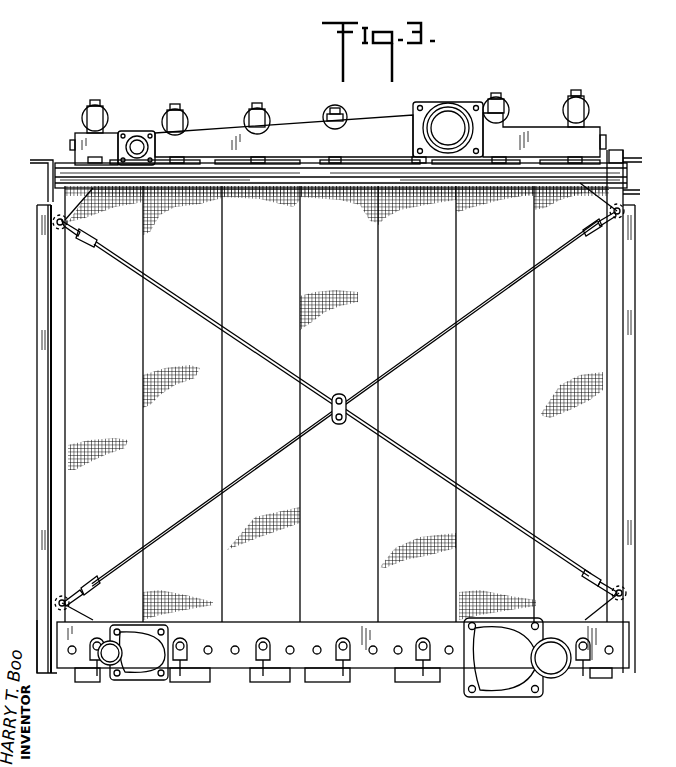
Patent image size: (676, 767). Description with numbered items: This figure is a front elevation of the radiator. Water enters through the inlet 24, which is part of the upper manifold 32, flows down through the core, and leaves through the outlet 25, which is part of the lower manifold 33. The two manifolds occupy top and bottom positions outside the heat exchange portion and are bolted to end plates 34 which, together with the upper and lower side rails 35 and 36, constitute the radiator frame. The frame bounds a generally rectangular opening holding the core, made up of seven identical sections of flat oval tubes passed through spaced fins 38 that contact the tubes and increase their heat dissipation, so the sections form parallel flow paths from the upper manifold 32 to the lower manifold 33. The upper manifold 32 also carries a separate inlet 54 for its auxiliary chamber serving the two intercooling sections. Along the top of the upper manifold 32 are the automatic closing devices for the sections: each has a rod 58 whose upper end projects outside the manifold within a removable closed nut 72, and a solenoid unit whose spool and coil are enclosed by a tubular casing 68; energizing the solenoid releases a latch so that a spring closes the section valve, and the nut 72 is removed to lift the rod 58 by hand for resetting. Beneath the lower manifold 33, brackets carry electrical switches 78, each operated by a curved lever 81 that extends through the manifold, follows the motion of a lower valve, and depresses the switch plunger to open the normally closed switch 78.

The inlet 24 is at (440, 118).
The outlet 25 is at (550, 680).
The upper manifold 32 is at (316, 132).
The lower manifold 33 is at (328, 632).
The end plates 34 is at (57, 277).
The upper side rail 35 is at (608, 162).
The lower side rail 36 is at (62, 627).
The fins 38 is at (90, 440).
The separate inlet 54 is at (133, 135).
The rod 58 is at (110, 665).
The tubular casing 68 is at (272, 116).
The closed nut 72 is at (250, 104).
The electrical switch 78 is at (202, 690).
The curved lever 81 is at (340, 682).